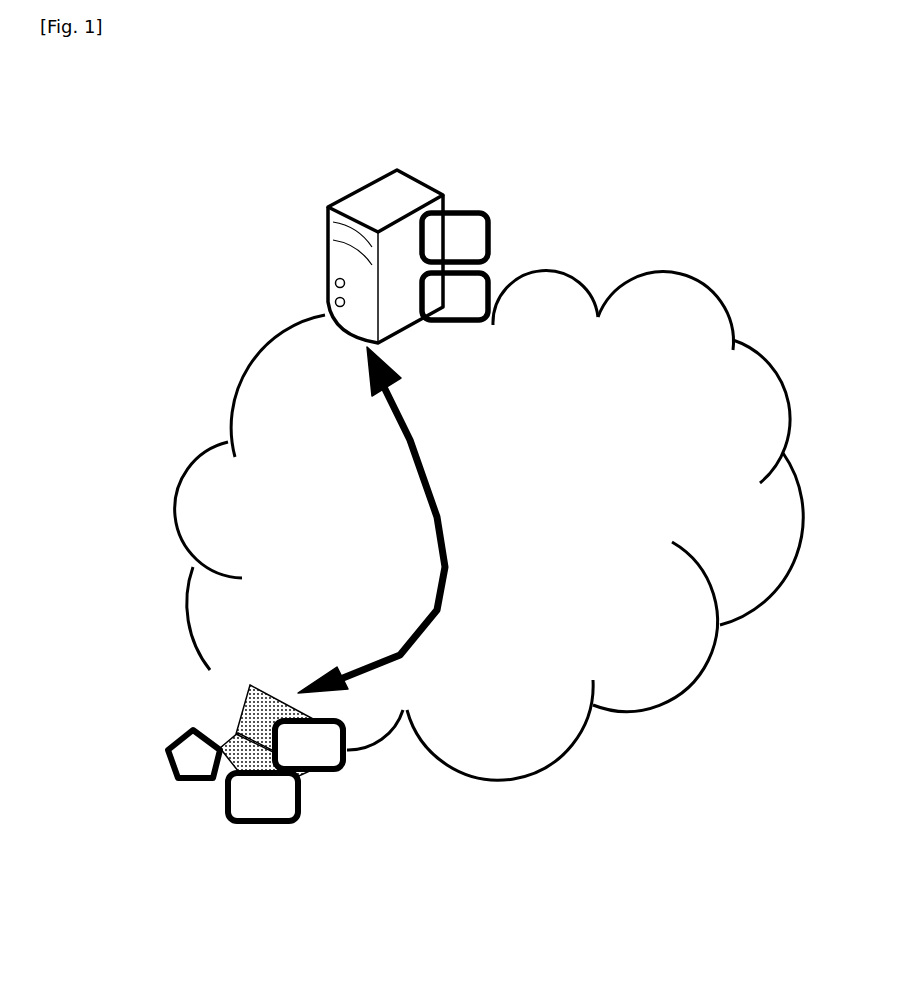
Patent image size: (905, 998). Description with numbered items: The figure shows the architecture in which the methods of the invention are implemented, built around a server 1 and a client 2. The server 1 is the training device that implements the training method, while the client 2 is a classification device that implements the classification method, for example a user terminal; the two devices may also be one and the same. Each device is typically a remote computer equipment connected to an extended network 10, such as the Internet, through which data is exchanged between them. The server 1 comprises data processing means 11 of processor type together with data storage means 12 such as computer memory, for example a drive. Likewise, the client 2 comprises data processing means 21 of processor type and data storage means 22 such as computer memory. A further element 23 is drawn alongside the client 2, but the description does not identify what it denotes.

The server 1 is at (395, 168).
The extended network 10 is at (240, 340).
The data processing means 11 is at (493, 303).
The data storage means 12 is at (493, 228).
The client 2 is at (235, 707).
The data processing means 21 is at (350, 773).
The data storage means 22 is at (297, 820).
The terminal module 23 is at (170, 773).